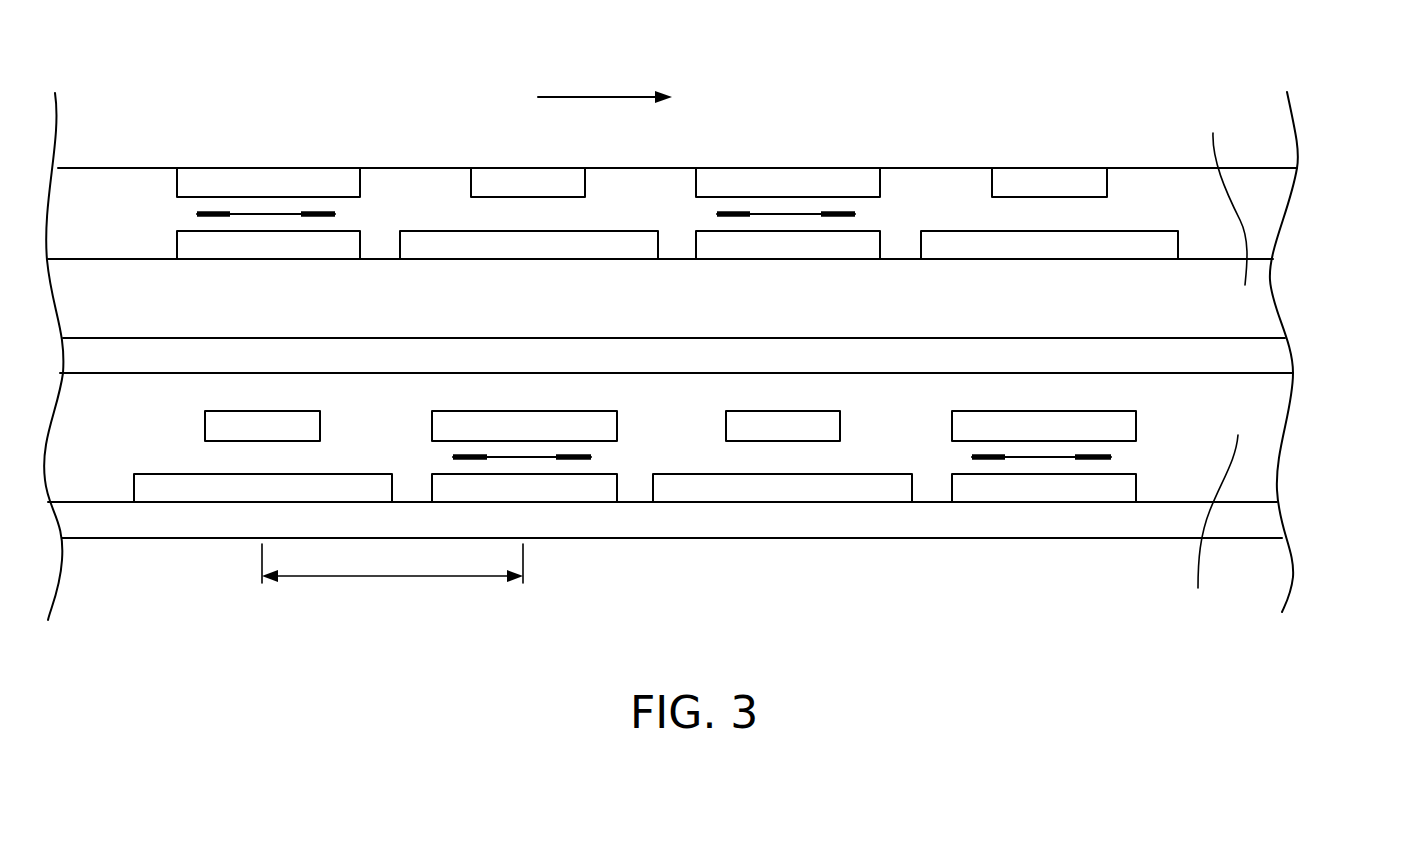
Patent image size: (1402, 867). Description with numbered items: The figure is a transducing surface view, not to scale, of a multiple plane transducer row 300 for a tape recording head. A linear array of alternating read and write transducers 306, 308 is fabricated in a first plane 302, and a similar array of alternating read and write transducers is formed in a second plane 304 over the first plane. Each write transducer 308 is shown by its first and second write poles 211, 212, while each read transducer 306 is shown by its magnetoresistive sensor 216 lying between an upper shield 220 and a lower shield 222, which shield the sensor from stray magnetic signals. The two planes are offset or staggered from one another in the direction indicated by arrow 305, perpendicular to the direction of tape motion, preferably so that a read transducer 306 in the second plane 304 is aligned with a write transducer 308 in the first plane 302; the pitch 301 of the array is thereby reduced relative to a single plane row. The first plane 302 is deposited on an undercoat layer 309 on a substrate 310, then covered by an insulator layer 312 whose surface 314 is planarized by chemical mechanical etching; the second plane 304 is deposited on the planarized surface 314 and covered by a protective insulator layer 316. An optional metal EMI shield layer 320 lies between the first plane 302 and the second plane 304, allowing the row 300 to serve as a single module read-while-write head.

The multiple plane transducer row 300 is at (912, 606).
The pitch 301 is at (392, 578).
The first plane 302 is at (1302, 411).
The second plane 304 is at (1302, 168).
The arrow 305 is at (600, 97).
The read transducer 306 is at (797, 168).
The write transducer 308 is at (1050, 168).
The undercoat layer 309 is at (1082, 524).
The substrate 310 is at (1277, 570).
The insulator layer 312 is at (1211, 364).
The planarized surface 314 is at (678, 260).
The protective insulator layer 316 is at (1278, 123).
The EMI shield layer 320 is at (1277, 358).
The first write pole 211 is at (1158, 231).
The second write pole 212 is at (1107, 178).
The magnetoresistive sensor 216 is at (857, 214).
The upper shield 220 is at (880, 180).
The lower shield 222 is at (855, 260).